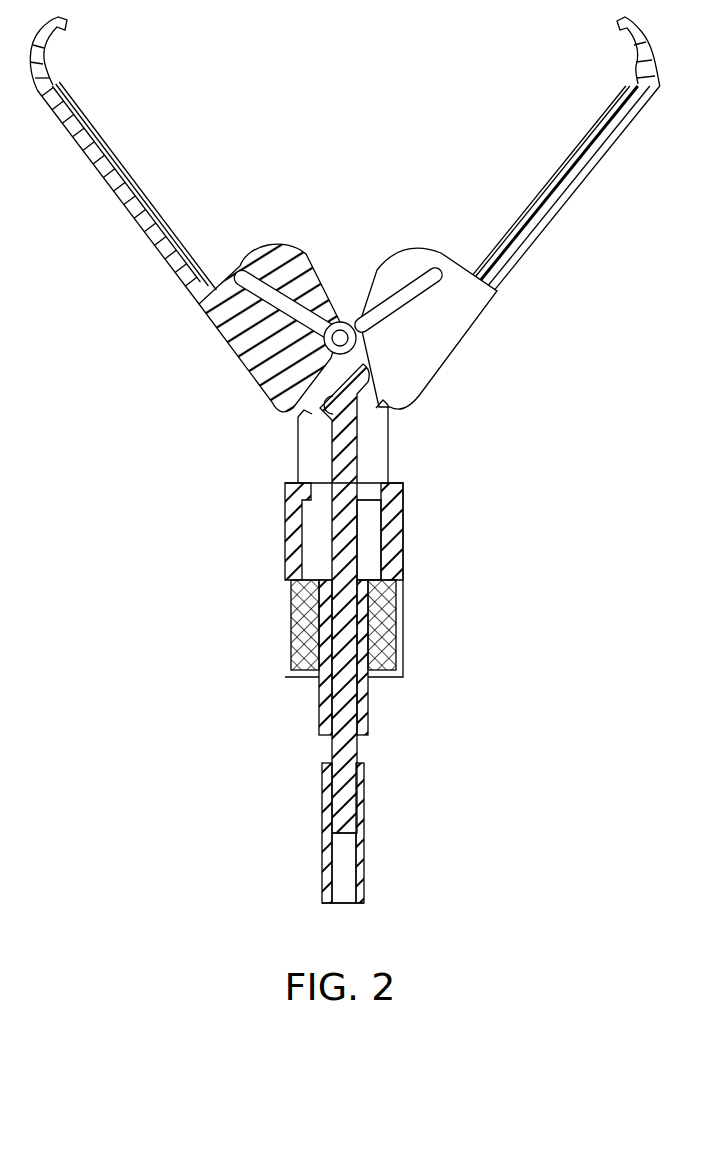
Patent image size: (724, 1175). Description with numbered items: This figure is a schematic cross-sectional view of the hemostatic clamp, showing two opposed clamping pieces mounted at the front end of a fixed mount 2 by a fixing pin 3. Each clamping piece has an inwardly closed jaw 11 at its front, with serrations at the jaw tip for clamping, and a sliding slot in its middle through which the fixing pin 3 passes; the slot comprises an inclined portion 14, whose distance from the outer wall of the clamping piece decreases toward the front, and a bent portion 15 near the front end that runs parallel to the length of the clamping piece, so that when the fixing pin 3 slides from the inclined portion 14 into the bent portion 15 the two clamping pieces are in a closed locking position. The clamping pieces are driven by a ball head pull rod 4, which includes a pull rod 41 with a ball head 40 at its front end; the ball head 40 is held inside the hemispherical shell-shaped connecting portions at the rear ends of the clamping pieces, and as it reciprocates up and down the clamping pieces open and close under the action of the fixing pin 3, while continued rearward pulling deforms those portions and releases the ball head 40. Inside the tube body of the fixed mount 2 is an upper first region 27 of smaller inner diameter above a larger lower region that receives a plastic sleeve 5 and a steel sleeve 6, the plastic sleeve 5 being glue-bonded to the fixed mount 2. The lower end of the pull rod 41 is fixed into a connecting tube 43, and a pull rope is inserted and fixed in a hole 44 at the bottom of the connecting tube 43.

The fixed mount 2 is at (372, 449).
The fixing pin 3 is at (344, 330).
The ball head pull rod 4 is at (340, 748).
The plastic sleeve 5 is at (303, 620).
The steel sleeve 6 is at (368, 613).
The jaw 11 is at (543, 215).
The inclined portion 14 is at (405, 308).
The bent portion 15 is at (242, 282).
The first region 27 is at (373, 537).
The ball head 40 is at (322, 406).
The pull rod 41 is at (345, 537).
The connecting tube 43 is at (362, 833).
The hole 44 is at (340, 870).